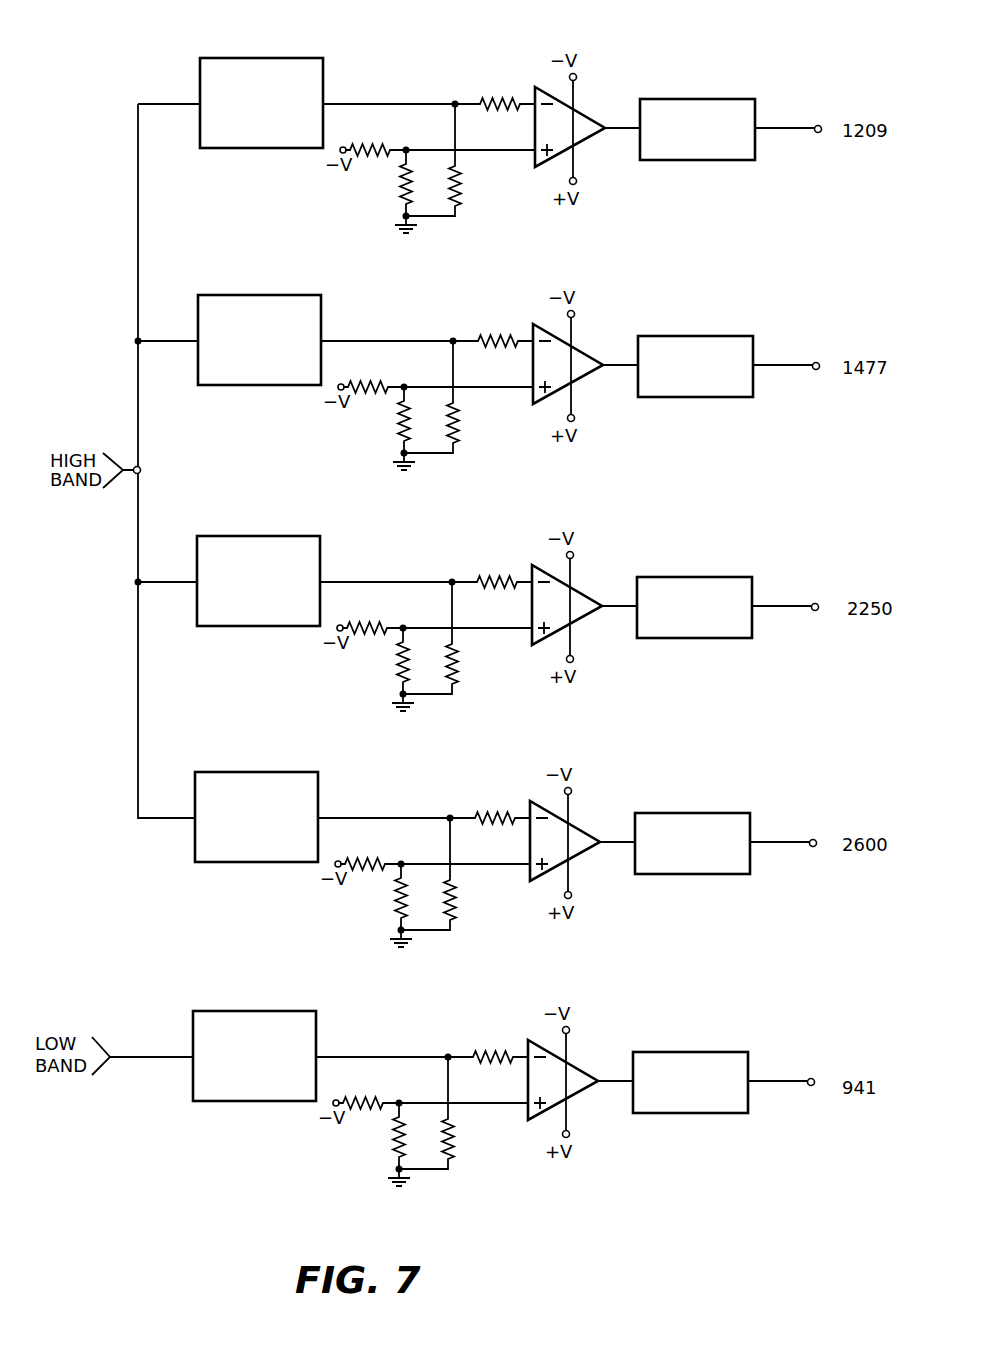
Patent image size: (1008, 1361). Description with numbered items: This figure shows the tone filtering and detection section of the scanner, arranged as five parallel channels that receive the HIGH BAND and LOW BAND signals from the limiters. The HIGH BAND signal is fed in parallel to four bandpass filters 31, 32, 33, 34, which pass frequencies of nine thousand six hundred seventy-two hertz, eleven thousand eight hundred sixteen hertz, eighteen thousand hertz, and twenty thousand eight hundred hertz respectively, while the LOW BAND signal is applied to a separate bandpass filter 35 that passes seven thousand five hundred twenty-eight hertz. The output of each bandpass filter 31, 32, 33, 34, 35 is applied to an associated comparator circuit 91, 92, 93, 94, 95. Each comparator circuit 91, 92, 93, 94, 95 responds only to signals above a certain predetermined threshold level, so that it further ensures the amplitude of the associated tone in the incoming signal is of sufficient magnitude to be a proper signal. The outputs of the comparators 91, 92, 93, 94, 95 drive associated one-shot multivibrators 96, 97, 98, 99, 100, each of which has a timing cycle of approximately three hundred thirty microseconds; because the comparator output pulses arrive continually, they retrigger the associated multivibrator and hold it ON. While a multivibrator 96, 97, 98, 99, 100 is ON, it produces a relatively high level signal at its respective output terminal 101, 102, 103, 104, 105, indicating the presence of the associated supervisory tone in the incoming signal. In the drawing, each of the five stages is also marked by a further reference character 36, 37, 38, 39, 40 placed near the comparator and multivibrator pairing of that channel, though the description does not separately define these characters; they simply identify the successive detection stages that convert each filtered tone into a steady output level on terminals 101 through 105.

The bandpass filter 31 is at (252, 58).
The bandpass filter 32 is at (258, 295).
The bandpass filter 33 is at (253, 544).
The bandpass filter 34 is at (245, 763).
The bandpass filter 35 is at (246, 1012).
The detector channel 36 is at (635, 92).
The detector channel 37 is at (634, 329).
The detector channel 38 is at (631, 574).
The detector channel 39 is at (633, 801).
The detector channel 40 is at (615, 1045).
The comparator circuit 91 is at (521, 71).
The comparator circuit 92 is at (519, 310).
The comparator circuit 93 is at (513, 550).
The comparator circuit 94 is at (523, 783).
The comparator circuit 95 is at (525, 1016).
The one-shot multivibrator 96 is at (721, 99).
The one-shot multivibrator 97 is at (725, 338).
The one-shot multivibrator 98 is at (720, 577).
The one-shot multivibrator 99 is at (698, 813).
The one-shot multivibrator 100 is at (688, 1055).
The output terminal 101 is at (818, 124).
The output terminal 102 is at (817, 362).
The output terminal 103 is at (815, 603).
The output terminal 104 is at (812, 840).
The output terminal 105 is at (810, 1078).